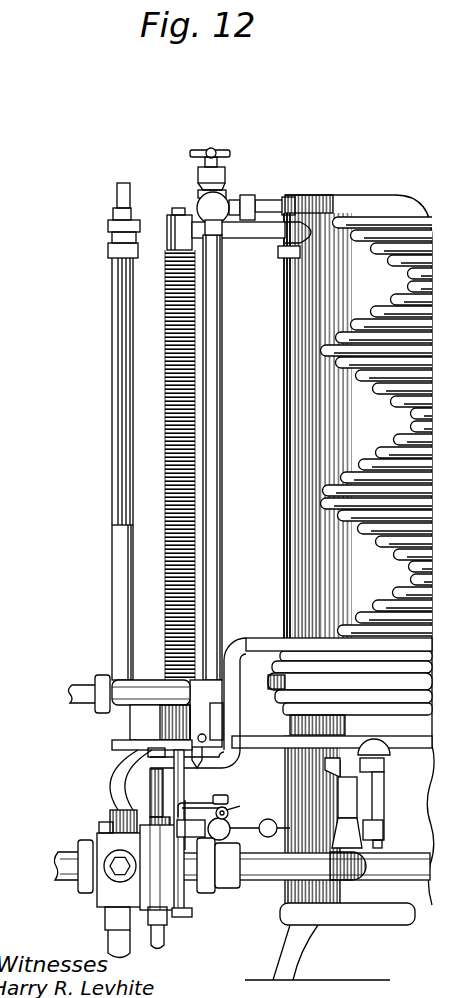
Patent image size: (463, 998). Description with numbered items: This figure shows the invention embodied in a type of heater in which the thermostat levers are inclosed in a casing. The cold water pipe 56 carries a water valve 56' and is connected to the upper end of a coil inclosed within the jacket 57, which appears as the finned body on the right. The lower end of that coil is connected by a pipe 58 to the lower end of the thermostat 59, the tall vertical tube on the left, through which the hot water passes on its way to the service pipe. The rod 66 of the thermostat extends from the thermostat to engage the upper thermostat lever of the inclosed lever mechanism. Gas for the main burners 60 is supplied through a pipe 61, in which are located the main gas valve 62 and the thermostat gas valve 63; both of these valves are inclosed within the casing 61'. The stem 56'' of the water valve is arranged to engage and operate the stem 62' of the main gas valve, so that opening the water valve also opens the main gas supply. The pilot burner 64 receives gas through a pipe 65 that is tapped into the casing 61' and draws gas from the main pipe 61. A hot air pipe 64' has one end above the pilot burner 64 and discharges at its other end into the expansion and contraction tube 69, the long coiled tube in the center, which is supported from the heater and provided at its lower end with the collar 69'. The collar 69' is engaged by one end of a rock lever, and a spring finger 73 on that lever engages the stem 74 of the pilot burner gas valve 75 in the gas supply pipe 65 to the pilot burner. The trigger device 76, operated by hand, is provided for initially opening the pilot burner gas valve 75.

The cold water pipe 56 is at (189, 458).
The water valve 56' is at (124, 715).
The stem of the water valve 56'' is at (101, 791).
The jacket 57 is at (293, 293).
The pipe 58 is at (250, 640).
The thermostat 59 is at (116, 590).
The main burners 60 is at (338, 795).
The pipe 61 is at (245, 826).
The casing 61' is at (91, 819).
The main gas valve 62 is at (189, 867).
The stem of the main gas valve 62' is at (109, 790).
The thermostat gas valve 63 is at (98, 902).
The pilot burner 64 is at (389, 793).
The hot air pipe 64' is at (332, 754).
The pipe 65 is at (336, 768).
The rod of the thermostat 66 is at (125, 473).
The expansion and contraction tube 69 is at (166, 444).
The collar 69' is at (201, 928).
The spring finger 73 is at (200, 804).
The stem 74 is at (229, 803).
The pilot burner gas valve 75 is at (232, 834).
The trigger device 76 is at (229, 812).